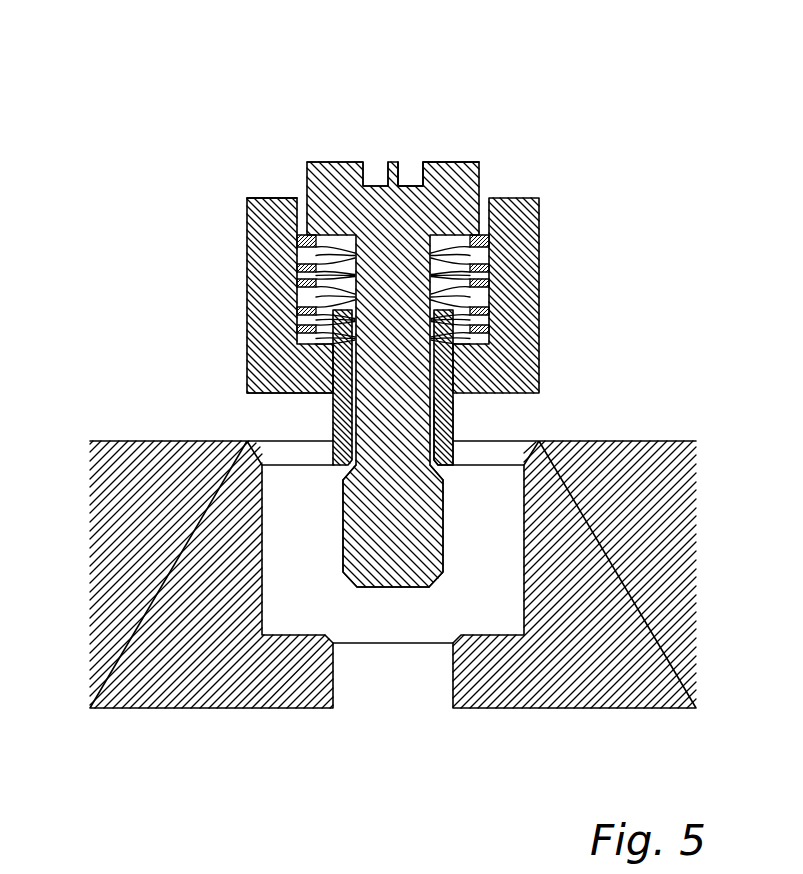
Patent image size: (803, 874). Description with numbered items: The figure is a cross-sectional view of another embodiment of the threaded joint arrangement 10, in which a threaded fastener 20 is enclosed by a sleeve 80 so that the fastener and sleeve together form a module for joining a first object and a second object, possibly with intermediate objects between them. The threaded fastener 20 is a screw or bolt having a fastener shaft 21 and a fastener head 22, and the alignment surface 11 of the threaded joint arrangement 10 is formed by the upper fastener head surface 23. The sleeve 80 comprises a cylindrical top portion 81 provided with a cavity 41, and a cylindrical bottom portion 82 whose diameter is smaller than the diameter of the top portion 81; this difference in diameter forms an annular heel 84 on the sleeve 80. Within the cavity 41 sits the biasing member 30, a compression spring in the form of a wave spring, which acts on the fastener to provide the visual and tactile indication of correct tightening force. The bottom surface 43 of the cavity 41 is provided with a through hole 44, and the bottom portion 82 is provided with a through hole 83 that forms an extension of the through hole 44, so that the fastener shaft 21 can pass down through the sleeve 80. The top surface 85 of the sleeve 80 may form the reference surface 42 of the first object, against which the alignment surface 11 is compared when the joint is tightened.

The threaded joint arrangement 10 is at (393, 377).
The alignment surface 11 is at (435, 116).
The threaded fastener 20 is at (403, 399).
The fastener shaft 21 is at (486, 622).
The fastener head 22 is at (310, 143).
The upper fastener head surface 23 is at (435, 116).
The biasing member 30 is at (474, 232).
The cavity 41 is at (524, 183).
The reference surface 42 is at (223, 144).
The bottom surface 43 is at (525, 355).
The through hole 44 is at (542, 410).
The sleeve 80 is at (344, 278).
The top portion 81 is at (288, 274).
The bottom portion 82 is at (492, 355).
The through hole 83 is at (310, 605).
The annular heel 84 is at (185, 425).
The top surface 85 is at (223, 144).